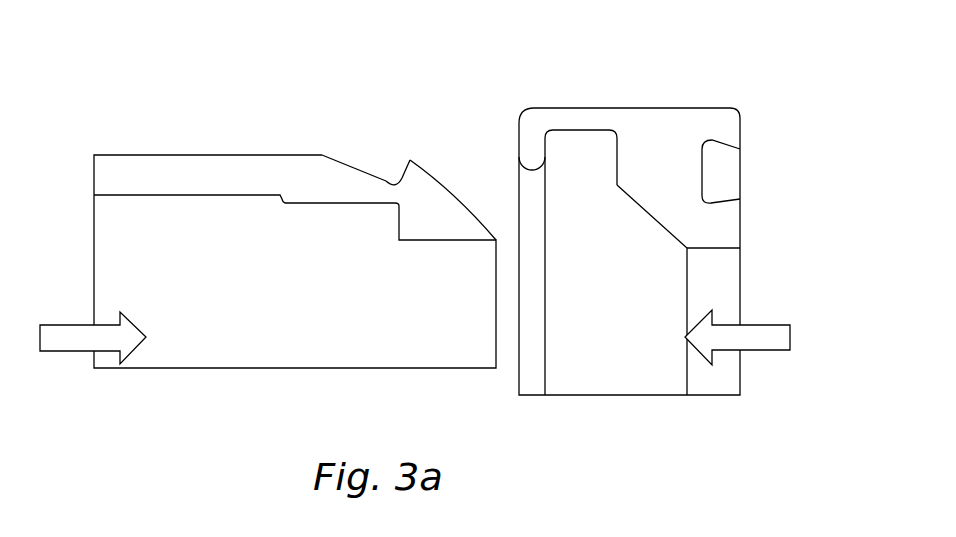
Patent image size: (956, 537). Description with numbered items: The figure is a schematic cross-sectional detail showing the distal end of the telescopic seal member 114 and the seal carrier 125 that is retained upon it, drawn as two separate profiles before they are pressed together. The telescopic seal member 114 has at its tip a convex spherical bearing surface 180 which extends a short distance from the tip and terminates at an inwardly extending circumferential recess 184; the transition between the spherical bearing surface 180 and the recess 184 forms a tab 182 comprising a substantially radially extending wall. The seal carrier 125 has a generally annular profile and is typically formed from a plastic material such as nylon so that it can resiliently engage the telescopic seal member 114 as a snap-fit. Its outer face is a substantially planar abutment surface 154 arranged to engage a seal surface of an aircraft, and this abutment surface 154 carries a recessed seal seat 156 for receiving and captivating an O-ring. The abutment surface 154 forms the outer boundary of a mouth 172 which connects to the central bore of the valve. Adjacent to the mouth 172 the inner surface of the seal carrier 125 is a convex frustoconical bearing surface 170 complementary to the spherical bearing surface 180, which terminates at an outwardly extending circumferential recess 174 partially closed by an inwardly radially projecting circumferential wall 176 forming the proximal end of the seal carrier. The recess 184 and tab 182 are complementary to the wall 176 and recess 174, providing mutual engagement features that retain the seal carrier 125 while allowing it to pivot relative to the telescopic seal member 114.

The telescopic seal member 114 is at (197, 347).
The circumferential recess 184 is at (378, 167).
The tab 182 is at (409, 161).
The spherical bearing surface 180 is at (462, 195).
The seal carrier 125 is at (636, 118).
The abutment surface 154 is at (723, 120).
The circumferential wall 176 is at (524, 137).
The circumferential recess 174 is at (578, 217).
The frustoconical bearing surface 170 is at (660, 270).
The mouth 172 is at (723, 255).
The seal seat 156 is at (720, 200).